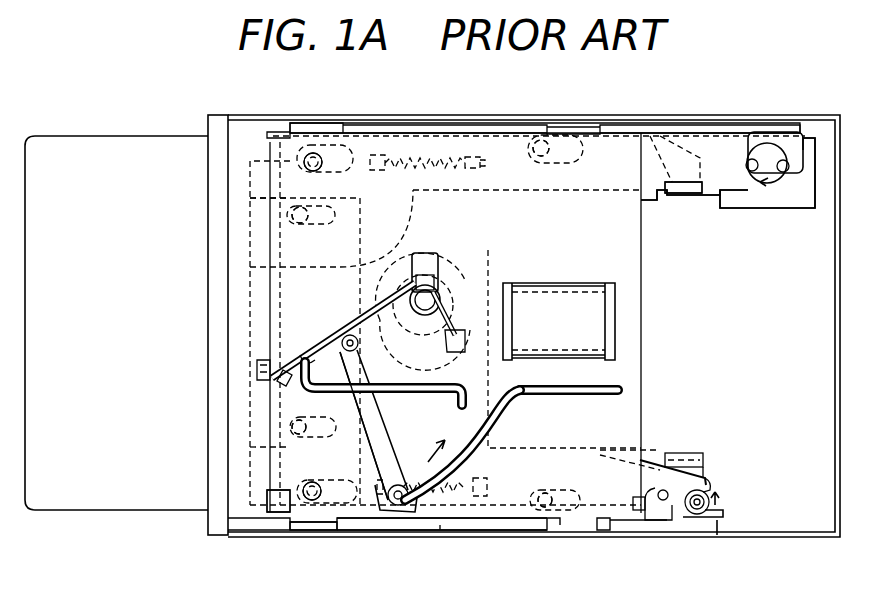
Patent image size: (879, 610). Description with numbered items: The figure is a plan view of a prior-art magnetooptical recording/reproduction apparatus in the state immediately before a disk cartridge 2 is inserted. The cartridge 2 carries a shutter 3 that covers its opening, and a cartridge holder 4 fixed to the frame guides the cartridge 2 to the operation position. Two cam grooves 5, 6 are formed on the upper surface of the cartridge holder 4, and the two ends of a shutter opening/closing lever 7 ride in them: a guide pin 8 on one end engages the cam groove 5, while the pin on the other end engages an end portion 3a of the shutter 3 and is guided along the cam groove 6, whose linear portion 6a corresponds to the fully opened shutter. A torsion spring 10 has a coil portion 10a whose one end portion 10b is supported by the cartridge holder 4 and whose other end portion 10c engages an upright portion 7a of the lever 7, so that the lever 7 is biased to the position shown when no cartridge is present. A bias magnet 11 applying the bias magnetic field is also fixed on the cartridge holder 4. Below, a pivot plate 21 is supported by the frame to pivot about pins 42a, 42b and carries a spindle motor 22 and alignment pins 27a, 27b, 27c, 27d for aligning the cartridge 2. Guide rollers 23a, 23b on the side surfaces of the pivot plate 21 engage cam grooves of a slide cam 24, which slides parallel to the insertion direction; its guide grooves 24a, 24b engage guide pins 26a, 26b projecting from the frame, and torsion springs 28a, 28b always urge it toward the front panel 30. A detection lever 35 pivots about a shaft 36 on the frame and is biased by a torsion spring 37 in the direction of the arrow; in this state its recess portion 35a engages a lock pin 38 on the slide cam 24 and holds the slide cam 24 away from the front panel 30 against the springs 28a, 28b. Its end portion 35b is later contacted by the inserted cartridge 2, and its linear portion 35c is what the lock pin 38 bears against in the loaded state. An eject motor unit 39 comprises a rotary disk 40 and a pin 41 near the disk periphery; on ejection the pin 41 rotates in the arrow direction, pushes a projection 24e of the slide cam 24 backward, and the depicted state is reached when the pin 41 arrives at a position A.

The disk cartridge 2 is at (89, 158).
The shutter 3 is at (280, 290).
The end portion of the shutter 3a is at (420, 525).
The cartridge holder 4 is at (268, 495).
The cam groove 5 is at (363, 390).
The cam groove 6 is at (490, 437).
The linear portion of the cam groove 6a is at (610, 385).
The shutter opening/closing lever 7 is at (365, 520).
The upright portion of the lever 7a is at (300, 360).
The guide pin 8 is at (337, 333).
The torsion spring 10 is at (383, 378).
The coil portion of the torsion spring 10a is at (438, 255).
The end portion of the torsion spring 10b is at (485, 280).
The end portion of the torsion spring 10c is at (265, 365).
The bias magnet 11 is at (563, 305).
The pivot plate 21 is at (705, 478).
The spindle motor 22 is at (355, 308).
The guide roller 23a is at (440, 528).
The guide roller 23b is at (452, 125).
The slide cam 24 is at (768, 132).
The guide groove 24a is at (265, 447).
The guide groove 24b is at (245, 193).
The projection of the slide cam 24e is at (792, 190).
The guide pin 26a is at (290, 427).
The guide pin 26b is at (290, 215).
The alignment pin 27a is at (300, 535).
The alignment pin 27b is at (558, 535).
The alignment pin 27c is at (313, 150).
The alignment pin 27d is at (553, 140).
The torsion spring 28a is at (465, 530).
The torsion spring 28b is at (412, 135).
The front panel 30 is at (215, 478).
The detection lever 35 is at (712, 482).
The recess portion of the detection lever 35a is at (705, 480).
The end portion of the detection lever 35b is at (608, 455).
The linear portion of the detection lever 35c is at (642, 525).
The shaft 36 is at (705, 522).
The torsion spring 37 is at (740, 513).
The lock pin 38 is at (665, 520).
The eject motor unit 39 is at (720, 200).
The rotary disk 40 is at (775, 150).
The pin 41 is at (755, 175).
The pin (shaft) 42a is at (690, 455).
The pin (shaft) 42b is at (665, 135).
The position A is at (780, 185).